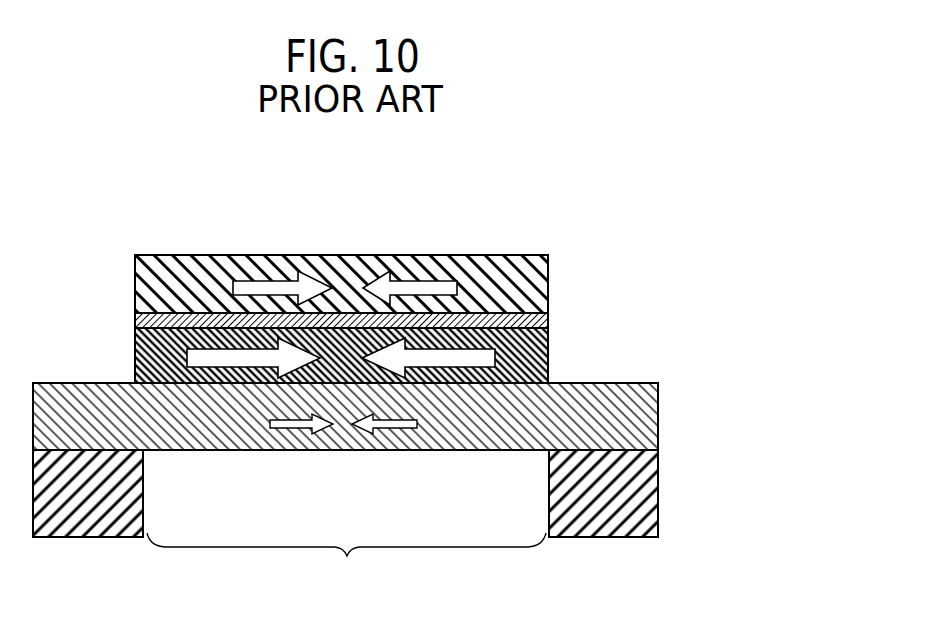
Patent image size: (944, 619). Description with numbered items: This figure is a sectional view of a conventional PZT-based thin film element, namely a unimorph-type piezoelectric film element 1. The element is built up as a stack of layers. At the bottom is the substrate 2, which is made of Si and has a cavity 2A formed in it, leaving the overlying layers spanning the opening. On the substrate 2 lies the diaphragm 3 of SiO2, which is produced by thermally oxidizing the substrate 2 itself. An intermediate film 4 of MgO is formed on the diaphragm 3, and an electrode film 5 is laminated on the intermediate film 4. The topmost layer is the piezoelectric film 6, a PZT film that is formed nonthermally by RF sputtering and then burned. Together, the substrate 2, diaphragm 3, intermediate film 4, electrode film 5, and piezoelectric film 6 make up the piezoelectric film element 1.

The piezoelectric film element 1 is at (161, 232).
The substrate 2 is at (632, 477).
The cavity 2A is at (346, 560).
The diaphragm 3 is at (632, 414).
The intermediate film 4 is at (548, 358).
The electrode film 5 is at (548, 315).
The piezoelectric film 6 is at (548, 268).